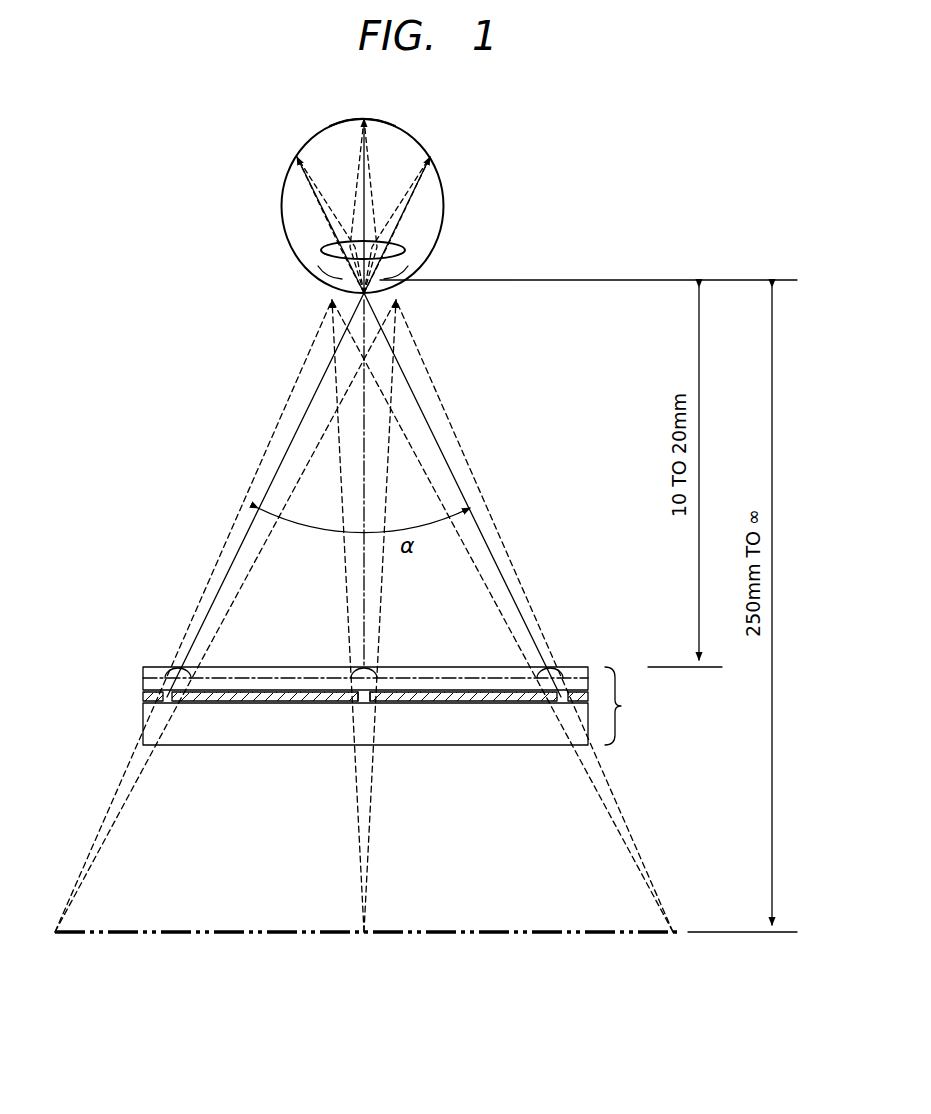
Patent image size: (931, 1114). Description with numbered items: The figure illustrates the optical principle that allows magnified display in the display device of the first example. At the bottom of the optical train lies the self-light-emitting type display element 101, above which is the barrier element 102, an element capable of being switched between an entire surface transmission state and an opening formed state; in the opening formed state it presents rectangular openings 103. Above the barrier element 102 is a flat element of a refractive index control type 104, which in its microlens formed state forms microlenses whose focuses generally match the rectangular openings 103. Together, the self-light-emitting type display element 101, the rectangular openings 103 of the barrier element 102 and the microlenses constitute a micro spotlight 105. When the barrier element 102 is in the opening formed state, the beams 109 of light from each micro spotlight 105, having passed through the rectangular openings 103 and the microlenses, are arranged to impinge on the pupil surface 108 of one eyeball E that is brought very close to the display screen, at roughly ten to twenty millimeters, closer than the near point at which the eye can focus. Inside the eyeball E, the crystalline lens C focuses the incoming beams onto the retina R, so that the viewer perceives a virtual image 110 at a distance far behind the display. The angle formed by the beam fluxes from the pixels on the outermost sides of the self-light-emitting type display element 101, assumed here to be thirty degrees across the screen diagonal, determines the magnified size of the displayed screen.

The self-light-emitting type display element 101 is at (512, 740).
The barrier element 102 is at (262, 702).
The rectangular openings 103 is at (366, 702).
The flat element of a refractive index control type 104 is at (178, 668).
The micro spotlight 105 is at (630, 706).
The pupil surface 108 is at (393, 290).
The beams 109 is at (255, 562).
The virtual image 110 is at (268, 930).
The eyeball E is at (438, 212).
The retina R is at (412, 152).
The crystalline lens C is at (337, 252).